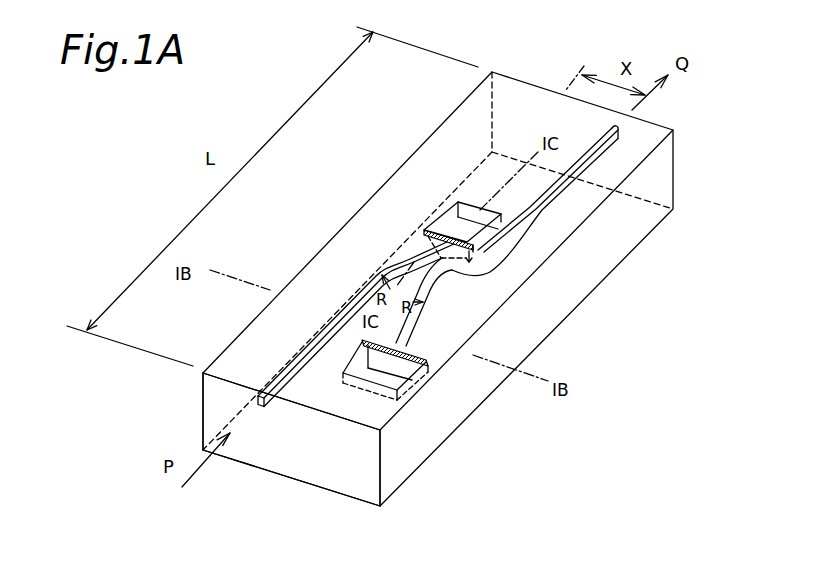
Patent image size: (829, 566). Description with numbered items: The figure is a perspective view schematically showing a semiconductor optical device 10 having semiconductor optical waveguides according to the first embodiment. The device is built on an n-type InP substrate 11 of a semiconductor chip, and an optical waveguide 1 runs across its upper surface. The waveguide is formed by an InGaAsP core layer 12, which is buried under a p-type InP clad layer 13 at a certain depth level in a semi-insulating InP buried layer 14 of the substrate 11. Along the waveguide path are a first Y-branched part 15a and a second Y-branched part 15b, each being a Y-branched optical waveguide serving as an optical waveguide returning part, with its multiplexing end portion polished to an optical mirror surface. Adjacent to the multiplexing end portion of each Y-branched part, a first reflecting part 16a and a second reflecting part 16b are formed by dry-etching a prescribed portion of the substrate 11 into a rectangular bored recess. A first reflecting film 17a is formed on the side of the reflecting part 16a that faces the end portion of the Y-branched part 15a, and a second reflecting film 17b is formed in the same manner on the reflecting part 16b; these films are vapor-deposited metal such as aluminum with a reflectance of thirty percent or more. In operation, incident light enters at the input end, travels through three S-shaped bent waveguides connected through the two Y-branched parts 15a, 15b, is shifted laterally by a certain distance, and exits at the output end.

The semiconductor optical device 10 is at (688, 130).
The optical waveguide 1 is at (533, 215).
The n-type InP substrate 11 is at (309, 469).
The semi-insulating InP buried layer 14 is at (343, 483).
The InGaAsP core layer 12 is at (259, 463).
The p-type InP clad layer 13 is at (261, 407).
The first Y-branched part 15a is at (480, 272).
The second Y-branched part 15b is at (432, 304).
The first reflecting part 16a is at (458, 203).
The second reflecting part 16b is at (383, 375).
The first reflecting film 17a is at (424, 230).
The second reflecting film 17b is at (424, 358).